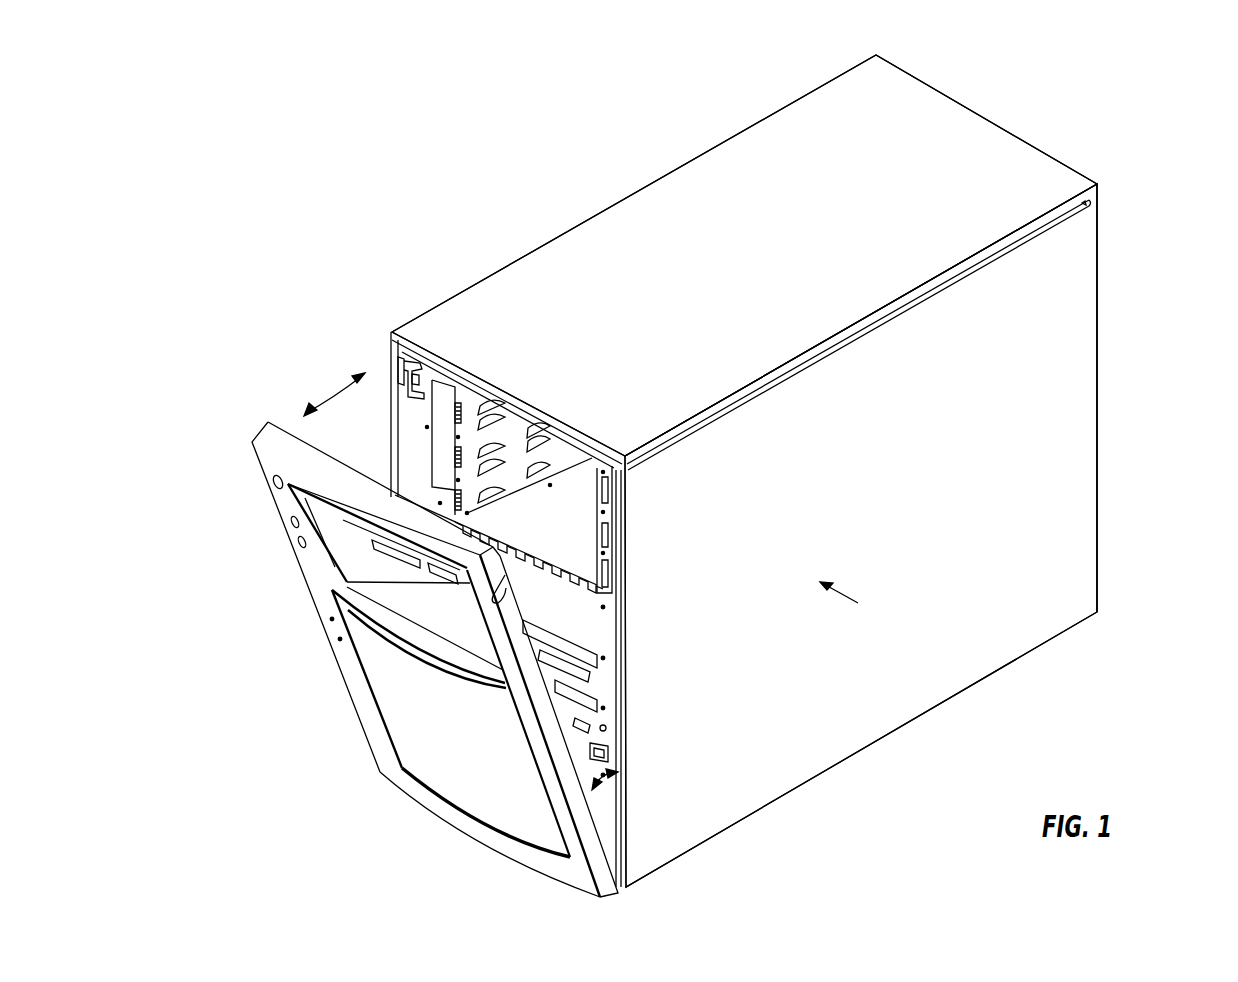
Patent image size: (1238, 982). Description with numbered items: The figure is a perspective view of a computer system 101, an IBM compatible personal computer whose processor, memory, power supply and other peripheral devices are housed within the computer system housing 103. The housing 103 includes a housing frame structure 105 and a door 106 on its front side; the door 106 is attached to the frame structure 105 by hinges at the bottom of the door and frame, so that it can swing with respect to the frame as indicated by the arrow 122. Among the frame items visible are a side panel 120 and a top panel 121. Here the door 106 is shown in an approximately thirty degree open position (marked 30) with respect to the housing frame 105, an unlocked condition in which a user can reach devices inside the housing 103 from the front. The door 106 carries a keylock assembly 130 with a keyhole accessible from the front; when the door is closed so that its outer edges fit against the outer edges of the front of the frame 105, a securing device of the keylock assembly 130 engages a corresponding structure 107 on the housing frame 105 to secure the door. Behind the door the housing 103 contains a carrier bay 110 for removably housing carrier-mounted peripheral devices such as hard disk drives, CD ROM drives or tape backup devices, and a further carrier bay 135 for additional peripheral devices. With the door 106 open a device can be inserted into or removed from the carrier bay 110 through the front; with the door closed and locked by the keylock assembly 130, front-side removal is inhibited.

The computer system 101 is at (740, 130).
The computer system housing 103 is at (1098, 247).
The housing frame structure 105 is at (858, 603).
The door 106 is at (495, 802).
The corresponding structure 107 is at (390, 373).
The carrier bay 110 is at (572, 503).
The side panel 120 is at (909, 544).
The top panel 121 is at (795, 268).
The arrow 122 is at (323, 392).
The keylock assembly 130 is at (272, 478).
The carrier bay 135 is at (578, 623).
The bezel opening angle 30 is at (607, 782).